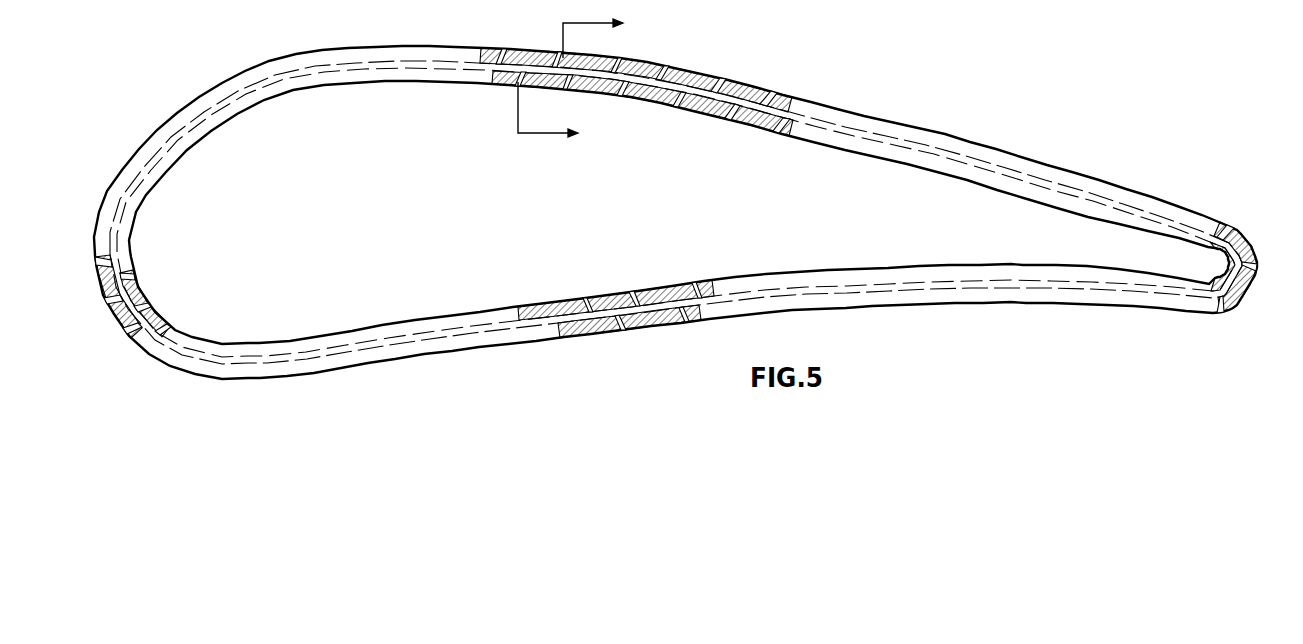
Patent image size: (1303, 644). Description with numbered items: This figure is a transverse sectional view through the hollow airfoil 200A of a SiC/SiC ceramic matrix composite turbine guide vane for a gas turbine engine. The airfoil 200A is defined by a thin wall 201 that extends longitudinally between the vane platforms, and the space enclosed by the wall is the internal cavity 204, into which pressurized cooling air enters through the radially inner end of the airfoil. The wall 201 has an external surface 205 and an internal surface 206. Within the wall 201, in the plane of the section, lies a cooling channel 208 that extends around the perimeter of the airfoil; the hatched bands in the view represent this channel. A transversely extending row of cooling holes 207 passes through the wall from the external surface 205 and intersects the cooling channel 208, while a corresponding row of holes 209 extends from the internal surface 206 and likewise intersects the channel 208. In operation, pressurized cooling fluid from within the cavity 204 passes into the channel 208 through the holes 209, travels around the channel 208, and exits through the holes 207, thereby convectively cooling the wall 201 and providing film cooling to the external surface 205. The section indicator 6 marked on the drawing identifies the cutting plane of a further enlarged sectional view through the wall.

The hollow airfoil 200A is at (691, 215).
The thin wall 201 is at (750, 314).
The internal cavity 204 is at (364, 206).
The external surface 205 is at (448, 353).
The internal surface 206 is at (447, 311).
The cooling holes 207 is at (718, 87).
The cooling channel 208 is at (640, 87).
The holes 209 is at (623, 92).
The section line 6- 6 is at (583, 79).